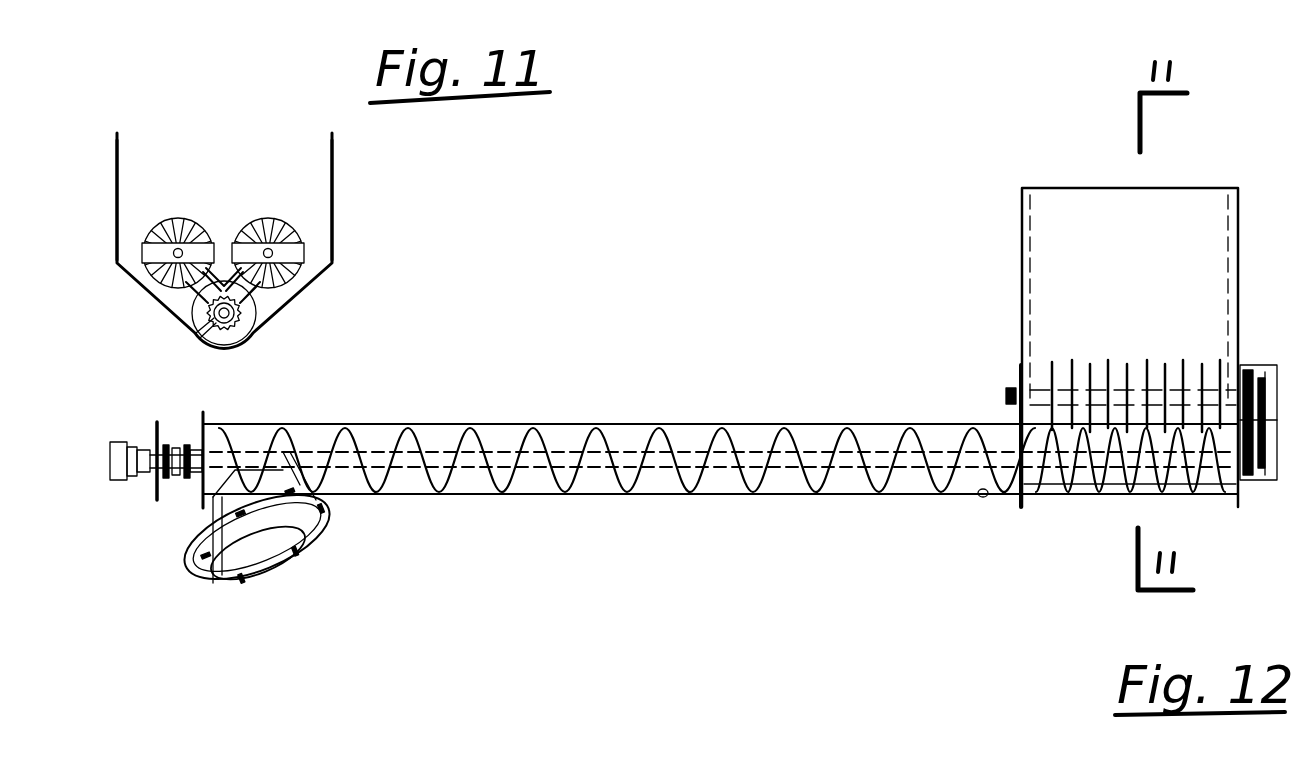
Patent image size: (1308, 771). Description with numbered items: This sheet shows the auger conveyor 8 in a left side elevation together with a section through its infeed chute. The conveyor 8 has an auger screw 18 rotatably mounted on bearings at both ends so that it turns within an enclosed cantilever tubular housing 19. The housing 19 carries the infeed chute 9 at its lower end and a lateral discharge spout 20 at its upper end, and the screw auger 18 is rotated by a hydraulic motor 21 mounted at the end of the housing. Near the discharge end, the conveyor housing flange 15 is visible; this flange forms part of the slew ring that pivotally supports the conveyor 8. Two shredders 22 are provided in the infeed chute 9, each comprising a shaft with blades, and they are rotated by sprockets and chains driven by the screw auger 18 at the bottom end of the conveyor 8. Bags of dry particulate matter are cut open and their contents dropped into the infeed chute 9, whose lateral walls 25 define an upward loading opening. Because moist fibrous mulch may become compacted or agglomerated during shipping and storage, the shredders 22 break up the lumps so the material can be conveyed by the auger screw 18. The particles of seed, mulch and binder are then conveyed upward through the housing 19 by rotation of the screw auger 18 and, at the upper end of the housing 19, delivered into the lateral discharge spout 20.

In FIG. 12, the conveyor 8 is at (638, 423).
In FIG. 11, the infeed chute 9 is at (341, 181).
In FIG. 12, the infeed chute 9 is at (1020, 242).
In FIG. 12, the conveyor housing flange 15 is at (327, 530).
In FIG. 11, the auger screw 18 is at (205, 348).
In FIG. 12, the auger screw 18 is at (700, 473).
In FIG. 12, the tubular housing 19 is at (443, 423).
In FIG. 12, the lateral discharge spout 20 is at (257, 582).
In FIG. 12, the hydraulic motor 21 is at (108, 460).
In FIG. 11, the shredders 22 is at (172, 216).
In FIG. 12, the shredders 22 is at (1113, 360).
In FIG. 11, the lateral walls 25 is at (115, 200).
In FIG. 12, the lateral walls 25 is at (1112, 205).